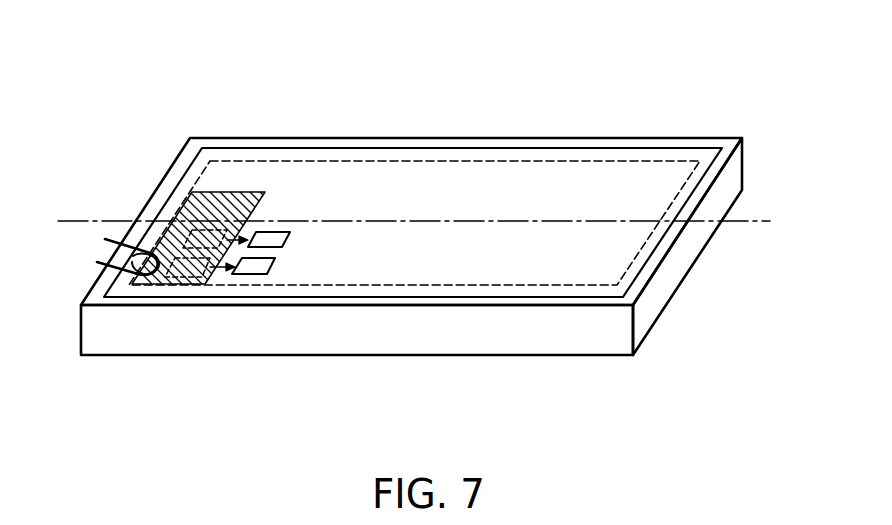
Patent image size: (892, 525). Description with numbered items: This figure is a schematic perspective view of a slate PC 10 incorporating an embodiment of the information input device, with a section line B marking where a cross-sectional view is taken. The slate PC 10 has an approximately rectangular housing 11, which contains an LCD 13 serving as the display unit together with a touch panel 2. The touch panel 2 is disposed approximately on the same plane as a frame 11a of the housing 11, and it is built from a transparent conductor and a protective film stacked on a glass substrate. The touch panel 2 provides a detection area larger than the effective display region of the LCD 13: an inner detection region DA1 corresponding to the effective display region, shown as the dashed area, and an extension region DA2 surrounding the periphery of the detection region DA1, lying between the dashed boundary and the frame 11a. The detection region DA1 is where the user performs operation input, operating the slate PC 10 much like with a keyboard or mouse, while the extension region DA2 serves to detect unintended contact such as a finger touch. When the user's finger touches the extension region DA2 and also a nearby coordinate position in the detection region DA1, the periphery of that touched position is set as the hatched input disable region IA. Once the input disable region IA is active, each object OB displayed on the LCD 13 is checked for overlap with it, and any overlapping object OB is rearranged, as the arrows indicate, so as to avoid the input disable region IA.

The slate PC 10 is at (241, 92).
The touch panel 2 is at (413, 166).
The LCD 13 is at (413, 166).
The housing 11 is at (662, 313).
The frame 11a is at (697, 145).
The detection region DA1 is at (595, 183).
The extension region DA2 is at (362, 152).
The input disable region IA is at (157, 284).
The object OB is at (186, 207).
The section line B- B is at (413, 221).